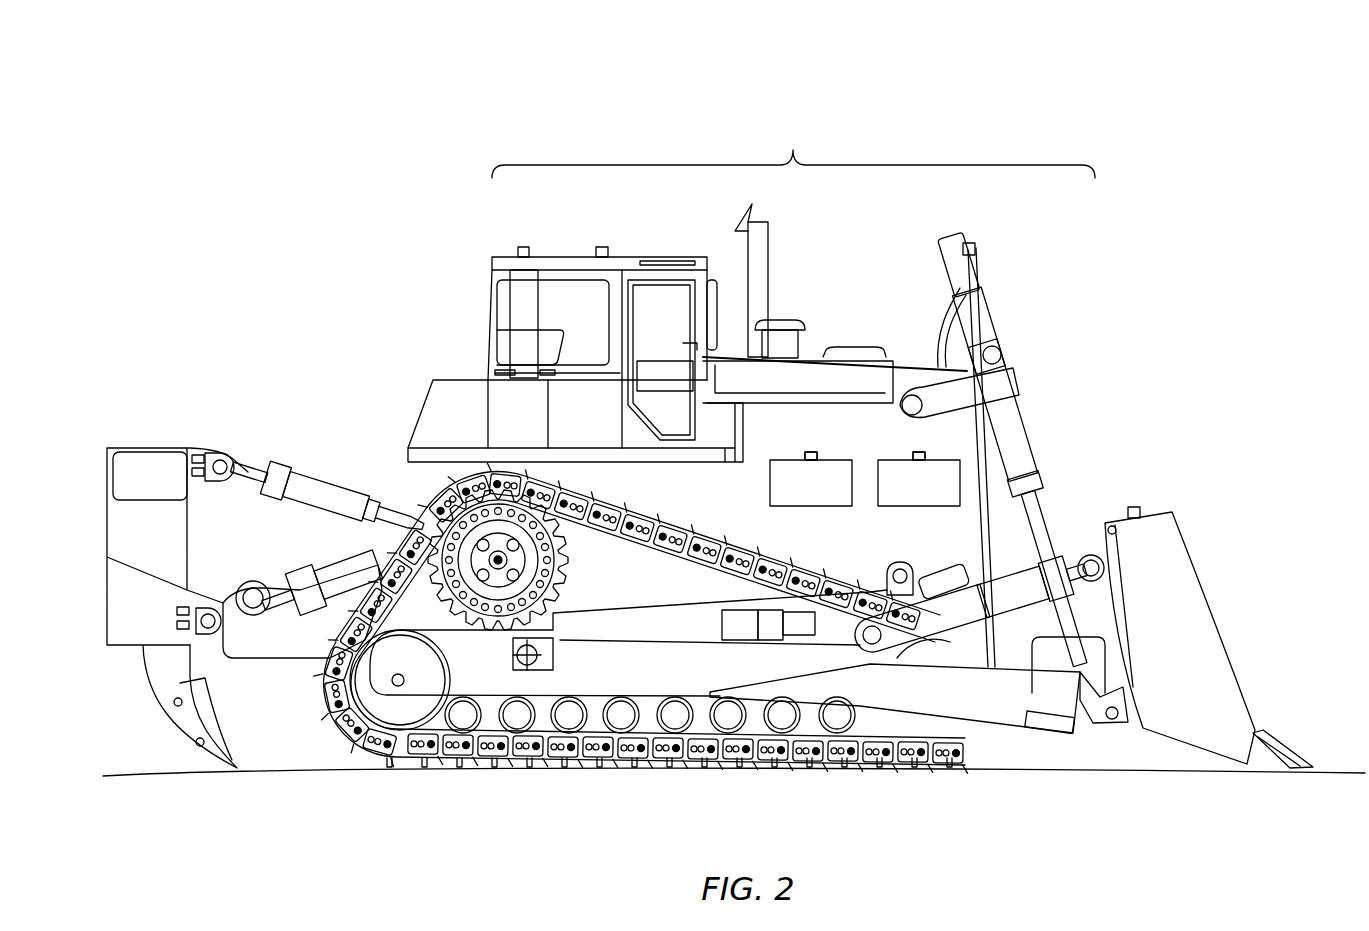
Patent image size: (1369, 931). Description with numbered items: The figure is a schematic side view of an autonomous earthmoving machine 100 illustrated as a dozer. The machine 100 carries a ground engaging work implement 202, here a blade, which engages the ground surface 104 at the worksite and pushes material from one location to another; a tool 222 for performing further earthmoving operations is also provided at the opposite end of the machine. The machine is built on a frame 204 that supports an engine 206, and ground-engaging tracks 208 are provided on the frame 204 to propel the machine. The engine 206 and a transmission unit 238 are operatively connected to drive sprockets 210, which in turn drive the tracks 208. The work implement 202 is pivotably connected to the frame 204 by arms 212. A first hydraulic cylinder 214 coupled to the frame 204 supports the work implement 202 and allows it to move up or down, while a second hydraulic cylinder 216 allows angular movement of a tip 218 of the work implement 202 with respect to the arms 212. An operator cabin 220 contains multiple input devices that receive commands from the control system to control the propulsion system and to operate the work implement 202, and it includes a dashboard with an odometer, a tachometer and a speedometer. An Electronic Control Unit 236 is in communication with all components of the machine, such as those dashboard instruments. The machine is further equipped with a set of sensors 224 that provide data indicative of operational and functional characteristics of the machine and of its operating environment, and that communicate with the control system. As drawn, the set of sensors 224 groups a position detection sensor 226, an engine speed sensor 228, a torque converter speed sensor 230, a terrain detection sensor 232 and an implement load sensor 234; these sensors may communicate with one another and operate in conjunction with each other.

The machine 100 is at (1222, 144).
The ground surface 104 is at (104, 774).
The ground engaging work implement 202 is at (1226, 583).
The frame 204 is at (435, 488).
The engine 206 is at (902, 494).
The tracks 208 is at (680, 763).
The drive sprockets 210 is at (498, 595).
The arms 212 is at (997, 700).
The first hydraulic cylinder 214 is at (1023, 428).
The second hydraulic cylinder 216 is at (1025, 535).
The tip 218 is at (1291, 752).
The operator cabin 220 is at (490, 296).
The tool 222 is at (142, 448).
The set of sensors 224 is at (793, 150).
The position detection sensor 226 is at (523, 246).
The engine speed sensor 228 is at (919, 452).
The torque converter speed sensor 230 is at (811, 452).
The terrain detection sensor 232 is at (602, 246).
The implement load sensor 234 is at (1134, 507).
The Electronic Control Unit 236 is at (650, 388).
The transmission unit 238 is at (794, 494).